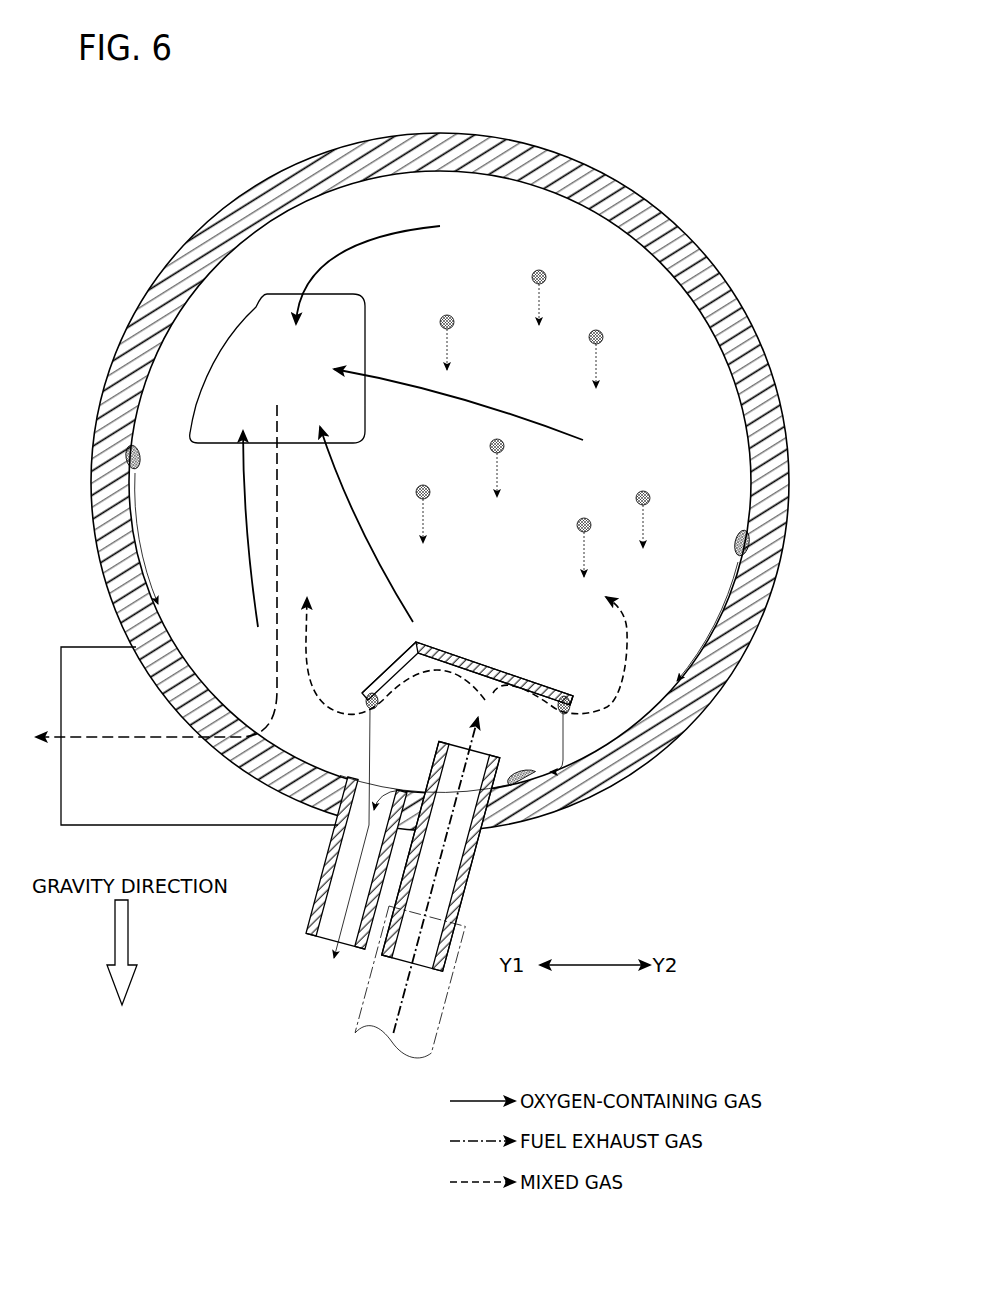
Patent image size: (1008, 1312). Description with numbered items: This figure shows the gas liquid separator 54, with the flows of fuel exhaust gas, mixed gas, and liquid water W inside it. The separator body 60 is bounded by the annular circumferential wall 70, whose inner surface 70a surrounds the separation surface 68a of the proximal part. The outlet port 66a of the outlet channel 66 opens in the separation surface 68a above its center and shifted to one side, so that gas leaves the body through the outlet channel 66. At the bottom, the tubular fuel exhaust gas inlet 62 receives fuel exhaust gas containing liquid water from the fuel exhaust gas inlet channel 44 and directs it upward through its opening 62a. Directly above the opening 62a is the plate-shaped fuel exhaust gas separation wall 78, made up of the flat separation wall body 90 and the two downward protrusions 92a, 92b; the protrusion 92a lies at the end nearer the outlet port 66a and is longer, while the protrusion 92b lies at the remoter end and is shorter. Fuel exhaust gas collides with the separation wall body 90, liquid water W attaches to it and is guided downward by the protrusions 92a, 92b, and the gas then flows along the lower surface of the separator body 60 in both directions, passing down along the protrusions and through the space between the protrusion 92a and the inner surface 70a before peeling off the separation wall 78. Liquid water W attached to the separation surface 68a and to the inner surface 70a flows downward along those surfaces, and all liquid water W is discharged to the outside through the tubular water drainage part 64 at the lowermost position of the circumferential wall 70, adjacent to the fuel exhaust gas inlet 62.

The gas liquid separator 54 is at (145, 127).
The separator body 60 is at (639, 194).
The circumferential wall 70 is at (698, 262).
The inner surface 70a is at (752, 492).
The separation surface 68a is at (573, 228).
The outlet channel 66 is at (225, 825).
The outlet port 66a is at (296, 426).
The fuel exhaust gas inlet 62 is at (473, 875).
The opening 62a is at (457, 742).
The water drainage part 64 is at (318, 894).
The fuel exhaust gas inlet channel 44 is at (447, 987).
The fuel exhaust gas separation wall 78 is at (473, 651).
The separation wall body 90 is at (462, 655).
The protrusion 92a is at (388, 672).
The protrusion 92b is at (575, 697).
The liquid water W is at (126, 458).